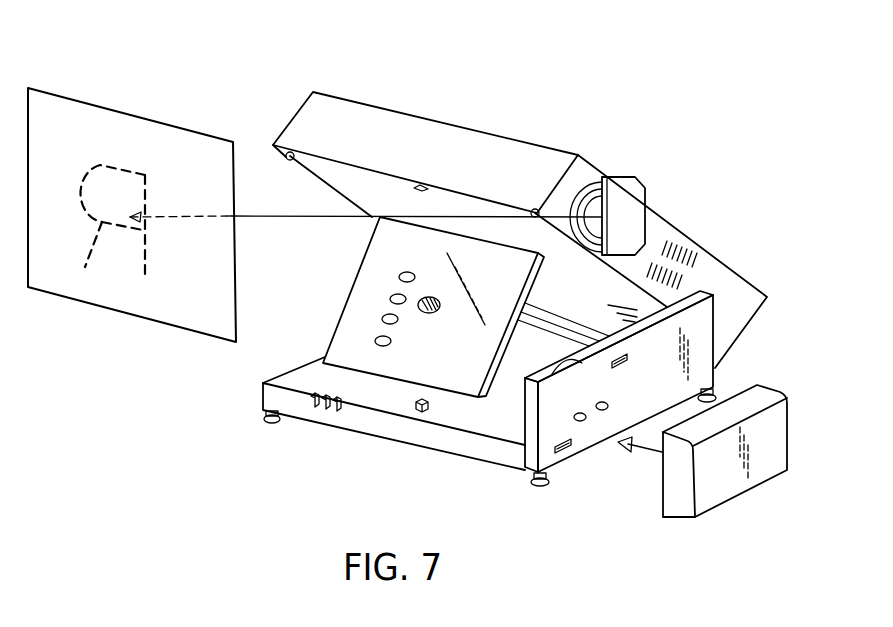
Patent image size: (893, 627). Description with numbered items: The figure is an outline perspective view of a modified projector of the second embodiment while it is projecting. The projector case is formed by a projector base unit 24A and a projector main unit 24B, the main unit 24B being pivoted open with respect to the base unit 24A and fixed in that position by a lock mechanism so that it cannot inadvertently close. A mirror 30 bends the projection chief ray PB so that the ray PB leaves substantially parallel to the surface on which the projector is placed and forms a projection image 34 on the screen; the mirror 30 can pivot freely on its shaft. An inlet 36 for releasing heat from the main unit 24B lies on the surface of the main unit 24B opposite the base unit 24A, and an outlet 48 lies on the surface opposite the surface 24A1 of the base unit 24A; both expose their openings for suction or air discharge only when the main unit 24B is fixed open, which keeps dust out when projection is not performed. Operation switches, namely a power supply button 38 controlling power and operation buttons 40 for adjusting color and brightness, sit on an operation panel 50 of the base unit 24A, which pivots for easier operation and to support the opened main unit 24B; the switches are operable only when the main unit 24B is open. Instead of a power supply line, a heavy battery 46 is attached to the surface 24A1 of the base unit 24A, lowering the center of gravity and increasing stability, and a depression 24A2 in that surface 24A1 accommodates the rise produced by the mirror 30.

The projection chief ray PB is at (265, 215).
The projection image 34 is at (90, 303).
The projector base unit 24A is at (263, 395).
The operation panel 50 is at (402, 373).
The power supply button 38 is at (432, 297).
The operation buttons 40 is at (393, 267).
The mirror 30 is at (627, 176).
The projector main unit 24B is at (707, 247).
The outlet 48 is at (683, 252).
The inlet 36 is at (633, 307).
The surface 24A1 is at (712, 337).
The depression 24A2 is at (538, 387).
The battery 46 is at (672, 492).